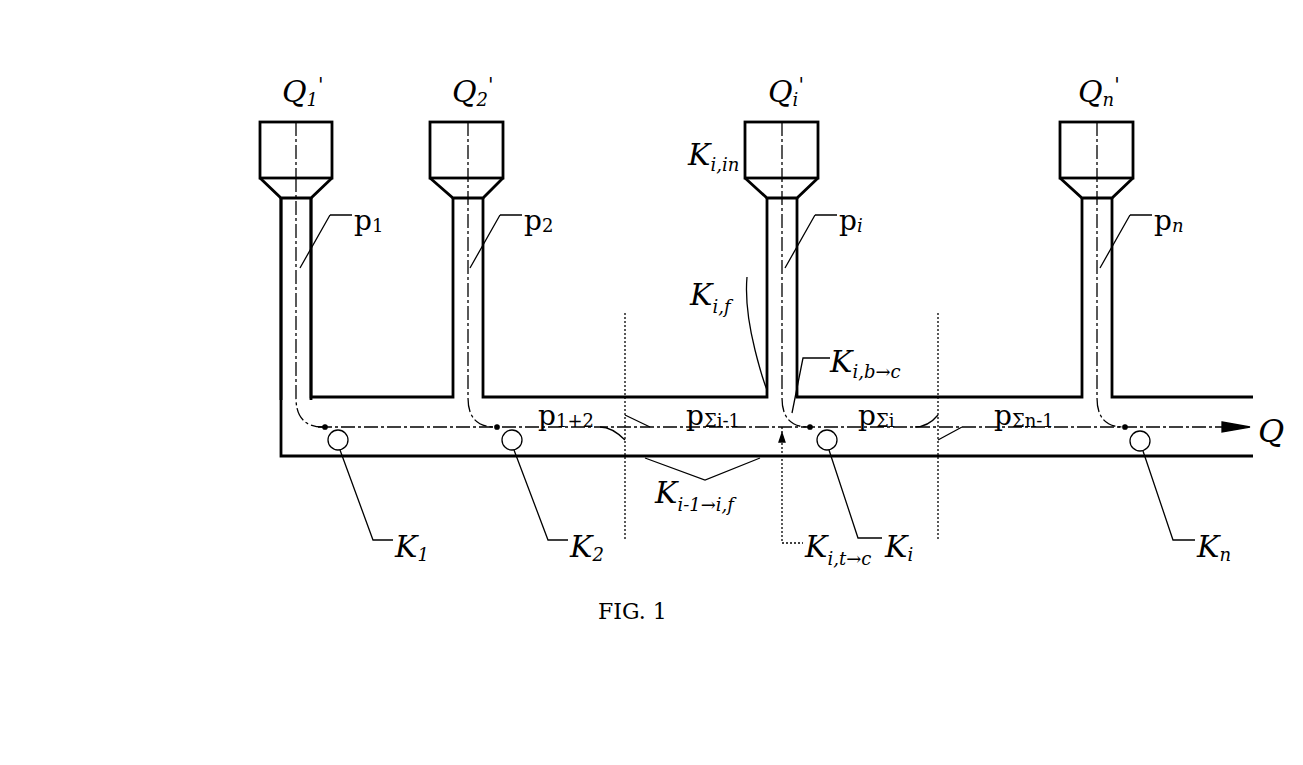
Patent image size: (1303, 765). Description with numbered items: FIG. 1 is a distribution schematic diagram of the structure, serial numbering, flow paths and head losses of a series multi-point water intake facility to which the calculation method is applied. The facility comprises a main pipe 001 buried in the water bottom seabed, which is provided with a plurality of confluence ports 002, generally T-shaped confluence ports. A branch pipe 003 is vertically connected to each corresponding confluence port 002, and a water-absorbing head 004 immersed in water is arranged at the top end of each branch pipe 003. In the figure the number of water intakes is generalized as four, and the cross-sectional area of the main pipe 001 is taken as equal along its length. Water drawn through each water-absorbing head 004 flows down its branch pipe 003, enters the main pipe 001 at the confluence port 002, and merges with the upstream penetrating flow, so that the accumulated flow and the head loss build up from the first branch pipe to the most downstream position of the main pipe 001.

The main pipe 001 is at (440, 447).
The confluence port 002 is at (470, 400).
The branch pipe 003 is at (291, 253).
The water-absorbing head 004 is at (275, 150).